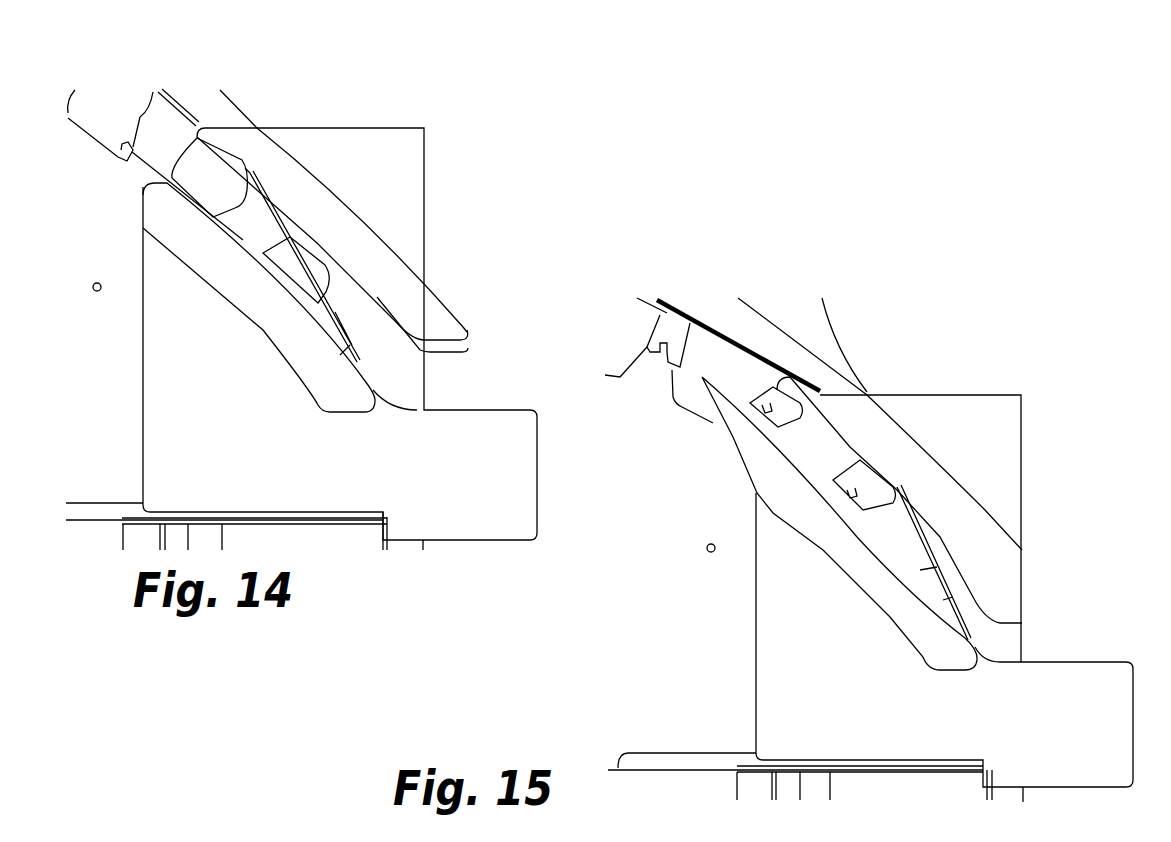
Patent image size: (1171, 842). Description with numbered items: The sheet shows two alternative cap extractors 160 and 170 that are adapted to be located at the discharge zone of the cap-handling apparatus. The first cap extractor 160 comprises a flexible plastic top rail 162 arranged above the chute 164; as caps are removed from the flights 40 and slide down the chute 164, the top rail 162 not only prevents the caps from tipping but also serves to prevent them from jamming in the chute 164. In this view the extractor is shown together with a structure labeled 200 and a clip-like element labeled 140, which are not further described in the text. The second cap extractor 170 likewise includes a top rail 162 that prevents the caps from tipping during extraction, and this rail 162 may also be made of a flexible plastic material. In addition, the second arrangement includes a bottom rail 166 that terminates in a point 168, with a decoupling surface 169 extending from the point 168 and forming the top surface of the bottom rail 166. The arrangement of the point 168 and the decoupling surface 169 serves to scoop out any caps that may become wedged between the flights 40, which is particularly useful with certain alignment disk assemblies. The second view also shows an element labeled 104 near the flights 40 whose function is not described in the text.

In FIG. 15, the flight 40 is at (625, 347).
In FIG. 15, the retaining tab 104 is at (662, 350).
In FIG. 14, the clip 140 is at (95, 110).
In FIG. 14, the cap extractor 160 is at (465, 165).
In FIG. 14, the top rail 162 is at (403, 287).
In FIG. 15, the top rail 162 is at (960, 513).
In FIG. 14, the chute 164 is at (385, 363).
In FIG. 15, the chute 164 is at (993, 633).
In FIG. 14, the bottom rail 166 is at (313, 352).
In FIG. 15, the bottom rail 166 is at (887, 577).
In FIG. 15, the point 168 is at (702, 377).
In FIG. 15, the decoupling surface 169 is at (790, 442).
In FIG. 15, the cap extractor 170 is at (893, 368).
In FIG. 14, the cover 200 is at (163, 147).